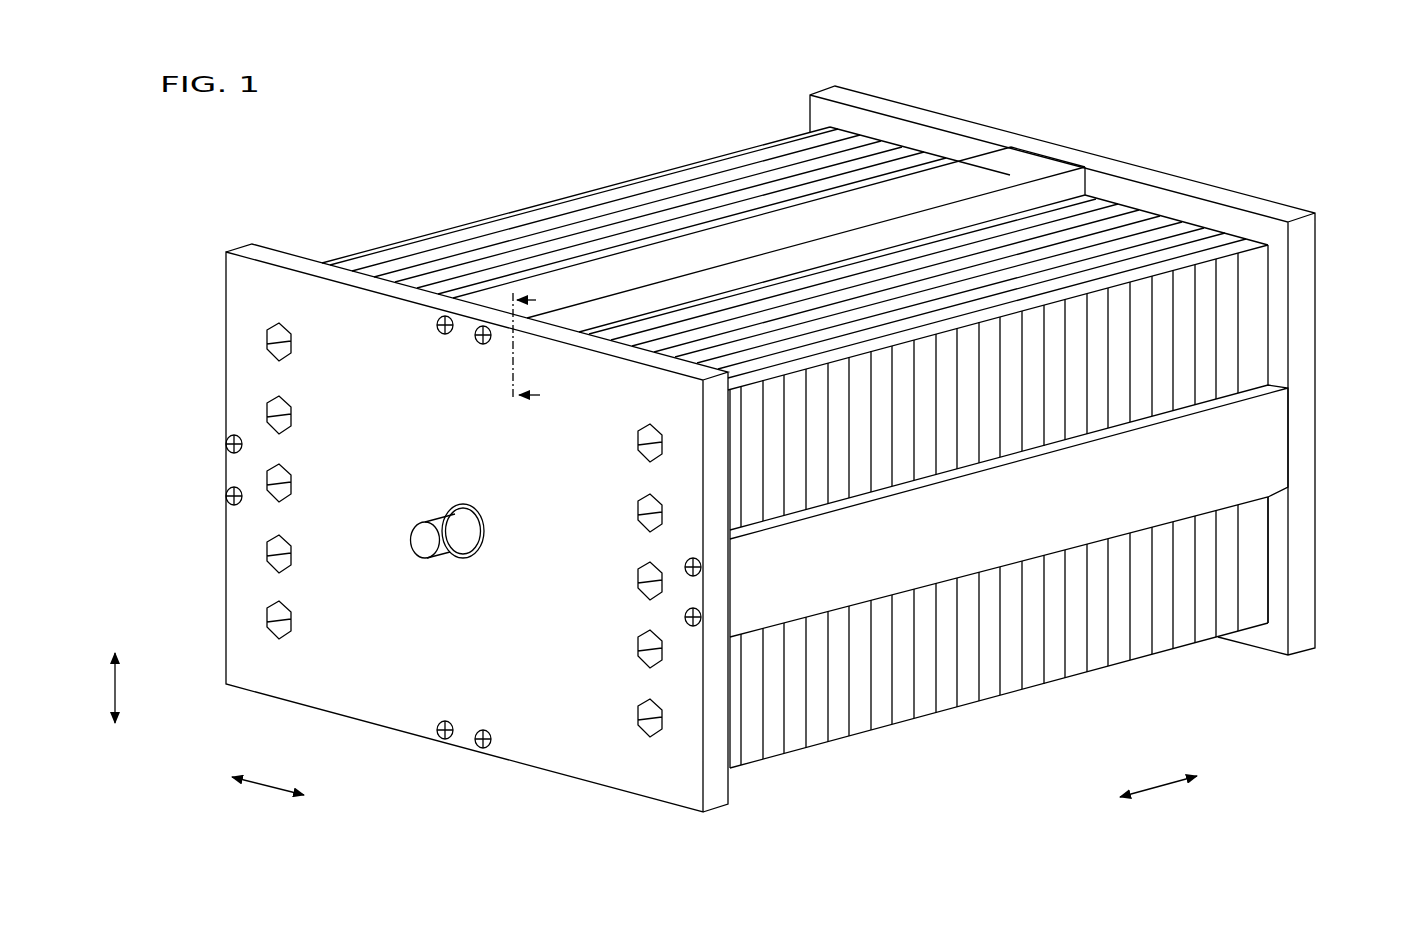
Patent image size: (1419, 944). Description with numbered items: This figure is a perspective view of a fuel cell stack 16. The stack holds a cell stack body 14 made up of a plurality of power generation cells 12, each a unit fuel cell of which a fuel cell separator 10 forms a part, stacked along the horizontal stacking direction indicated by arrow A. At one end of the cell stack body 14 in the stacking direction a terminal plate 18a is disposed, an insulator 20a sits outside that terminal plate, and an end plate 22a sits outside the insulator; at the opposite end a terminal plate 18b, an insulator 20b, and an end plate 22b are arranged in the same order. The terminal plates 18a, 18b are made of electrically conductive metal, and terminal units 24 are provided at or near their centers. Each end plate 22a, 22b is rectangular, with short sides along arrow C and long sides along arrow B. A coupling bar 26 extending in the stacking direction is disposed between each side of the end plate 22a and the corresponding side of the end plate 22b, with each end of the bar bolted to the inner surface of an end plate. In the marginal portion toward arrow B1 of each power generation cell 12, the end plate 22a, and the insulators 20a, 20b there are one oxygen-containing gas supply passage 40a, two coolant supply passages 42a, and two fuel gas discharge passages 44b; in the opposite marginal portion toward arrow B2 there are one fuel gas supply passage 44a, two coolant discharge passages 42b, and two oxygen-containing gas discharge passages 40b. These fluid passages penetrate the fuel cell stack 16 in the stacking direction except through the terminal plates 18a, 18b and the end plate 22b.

The fuel cell stack 16 is at (420, 121).
The cell stack body 14 is at (860, 475).
The power generation cell 12 is at (863, 723).
The fuel cell separator 10 is at (989, 523).
The coupling bar 26 is at (1038, 165).
The end plate 22a is at (609, 771).
The end plate 22b is at (1305, 622).
The terminal unit 24 is at (448, 551).
The oxygen-containing gas supply passage 40a is at (638, 580).
The oxygen-containing gas discharge passage 40b is at (291, 343).
The coolant supply passage 42a is at (638, 512).
The coolant discharge passage 42b is at (291, 416).
The fuel gas supply passage 44a is at (291, 484).
The fuel gas discharge passage 44b is at (638, 442).
The terminal plate 18a is at (737, 725).
The terminal plate 18b is at (1258, 555).
The insulator 20a is at (738, 758).
The insulator 20b is at (1260, 593).